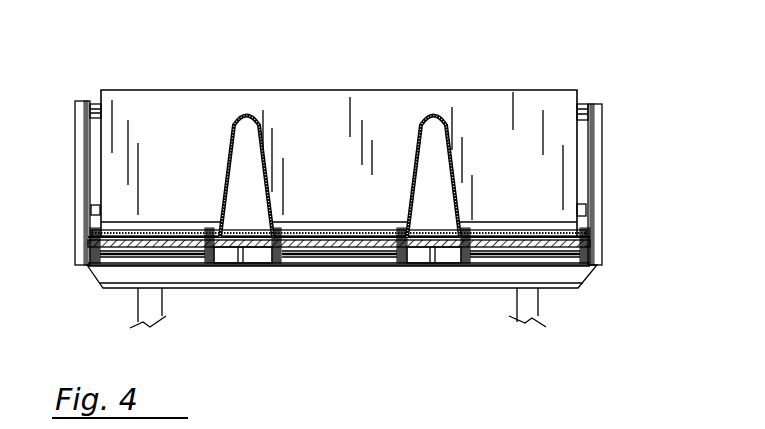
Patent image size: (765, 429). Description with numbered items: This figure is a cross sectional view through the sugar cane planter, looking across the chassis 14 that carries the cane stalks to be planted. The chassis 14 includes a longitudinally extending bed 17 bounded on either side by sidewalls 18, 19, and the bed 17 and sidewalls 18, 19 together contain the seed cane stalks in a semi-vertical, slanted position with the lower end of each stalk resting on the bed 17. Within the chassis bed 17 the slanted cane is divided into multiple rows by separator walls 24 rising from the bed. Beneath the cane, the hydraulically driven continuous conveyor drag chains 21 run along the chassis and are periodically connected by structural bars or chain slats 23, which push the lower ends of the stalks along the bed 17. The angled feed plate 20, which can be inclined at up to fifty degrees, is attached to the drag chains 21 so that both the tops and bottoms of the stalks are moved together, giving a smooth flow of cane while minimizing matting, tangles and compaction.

The chassis 14 is at (430, 270).
The bed 17 is at (333, 248).
The sidewall 18 is at (592, 135).
The sidewall 19 is at (85, 140).
The angled feed plate 20 is at (331, 131).
The continuous conveyor drag chains 21 is at (87, 223).
The chain slats 23 is at (138, 228).
The separator walls 24 is at (248, 113).